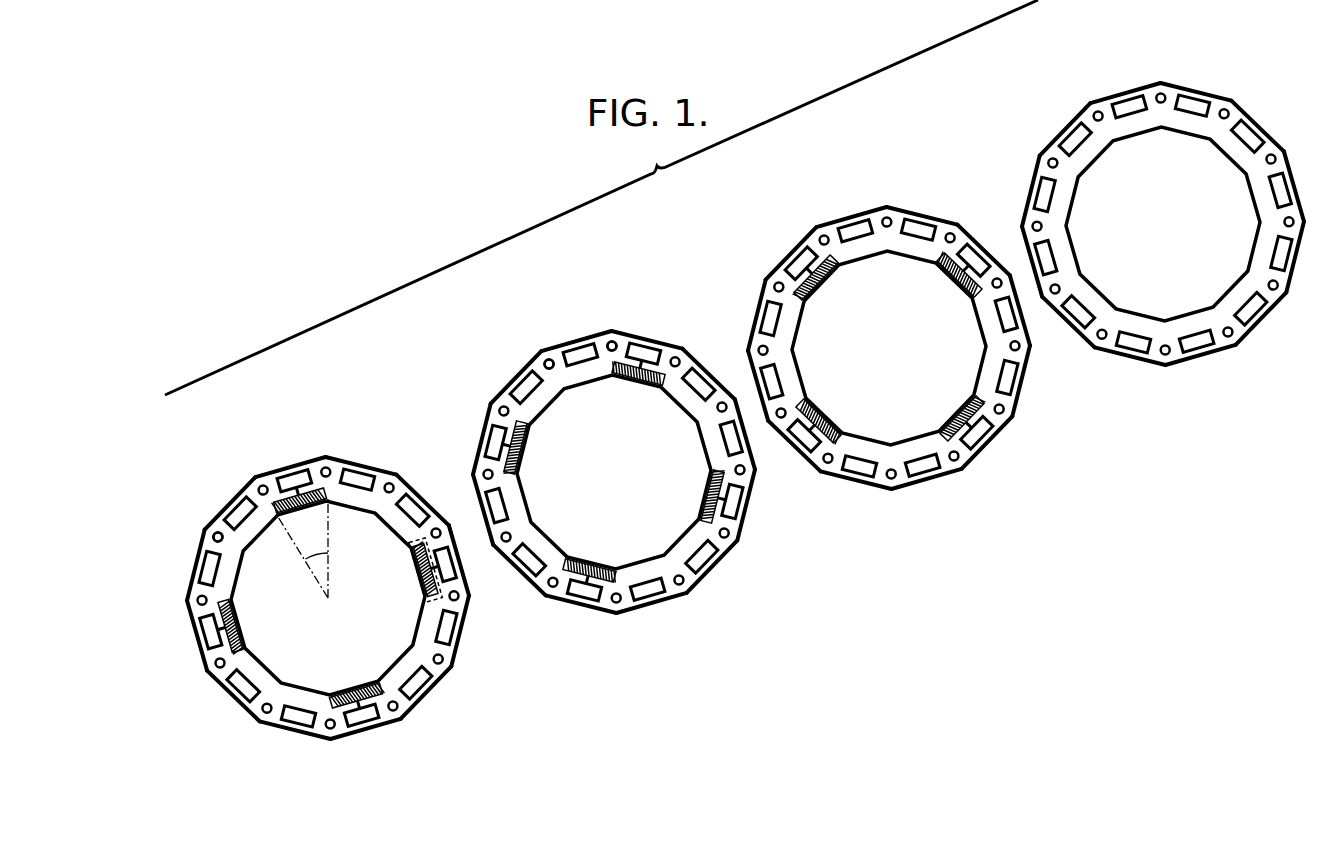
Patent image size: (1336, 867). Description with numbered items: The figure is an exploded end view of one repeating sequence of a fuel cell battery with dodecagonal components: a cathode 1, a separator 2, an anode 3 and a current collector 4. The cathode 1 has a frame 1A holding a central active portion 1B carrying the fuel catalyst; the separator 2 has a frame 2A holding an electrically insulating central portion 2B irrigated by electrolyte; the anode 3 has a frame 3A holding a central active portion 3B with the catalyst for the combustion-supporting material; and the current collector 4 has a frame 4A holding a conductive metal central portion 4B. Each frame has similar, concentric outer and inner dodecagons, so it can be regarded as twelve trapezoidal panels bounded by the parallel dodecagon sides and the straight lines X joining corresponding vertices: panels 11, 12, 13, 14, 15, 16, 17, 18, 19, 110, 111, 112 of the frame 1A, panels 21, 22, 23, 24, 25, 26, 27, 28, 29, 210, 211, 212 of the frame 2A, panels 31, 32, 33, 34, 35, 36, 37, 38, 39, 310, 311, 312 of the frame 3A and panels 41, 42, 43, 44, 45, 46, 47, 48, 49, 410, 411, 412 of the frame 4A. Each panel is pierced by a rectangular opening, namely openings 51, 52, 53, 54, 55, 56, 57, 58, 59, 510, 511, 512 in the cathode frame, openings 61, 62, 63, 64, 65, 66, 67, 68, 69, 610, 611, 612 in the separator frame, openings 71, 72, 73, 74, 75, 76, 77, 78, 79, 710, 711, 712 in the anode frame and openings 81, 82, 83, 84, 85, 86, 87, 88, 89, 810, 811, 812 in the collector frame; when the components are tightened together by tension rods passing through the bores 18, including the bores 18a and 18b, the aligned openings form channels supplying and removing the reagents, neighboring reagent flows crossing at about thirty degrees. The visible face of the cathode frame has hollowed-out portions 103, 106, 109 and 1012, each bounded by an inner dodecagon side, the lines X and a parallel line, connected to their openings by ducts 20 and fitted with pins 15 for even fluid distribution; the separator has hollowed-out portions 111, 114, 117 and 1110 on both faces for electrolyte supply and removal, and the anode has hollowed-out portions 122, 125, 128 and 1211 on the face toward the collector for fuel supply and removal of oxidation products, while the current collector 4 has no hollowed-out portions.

The cathode 1 is at (322, 454).
The separator 2 is at (608, 327).
The anode 3 is at (883, 203).
The current collector 4 is at (1157, 79).
The frame 1A is at (255, 477).
The central active portion 1B is at (290, 668).
The frame 2A is at (481, 466).
The central portion 2B is at (627, 560).
The frame 3A is at (767, 277).
The central active portion 3B is at (893, 440).
The frame 4A is at (1140, 85).
The central portion 4B is at (1168, 305).
The trapezoidal panel 11 is at (361, 465).
The trapezoidal panel 12 is at (423, 499).
The trapezoidal panel 13 is at (460, 560).
The trapezoidal panel 14 is at (461, 631).
The pins 15 is at (427, 693).
The trapezoidal panel 16 is at (366, 730).
The trapezoidal panel 17 is at (295, 731).
The bore 18 is at (218, 537).
The trapezoidal panel 19 is at (196, 636).
The trapezoidal panel 110 is at (195, 565).
The trapezoidal panel 111 is at (229, 503).
The trapezoidal panel 112 is at (290, 466).
The rectangular opening 51 is at (358, 480).
The rectangular opening 52 is at (413, 510).
The rectangular opening 53 is at (445, 564).
The rectangular opening 54 is at (446, 628).
The rectangular opening 55 is at (416, 683).
The rectangular opening 56 is at (362, 715).
The rectangular opening 57 is at (298, 716).
The rectangular opening 58 is at (243, 686).
The rectangular opening 59 is at (211, 632).
The rectangular opening 510 is at (210, 568).
The rectangular opening 511 is at (240, 513).
The rectangular opening 512 is at (294, 481).
The trapezoidal panel 21 is at (647, 339).
The trapezoidal panel 22 is at (709, 373).
The trapezoidal panel 23 is at (746, 434).
The trapezoidal panel 24 is at (747, 505).
The trapezoidal panel 25 is at (713, 567).
The trapezoidal panel 26 is at (652, 604).
The trapezoidal panel 27 is at (581, 605).
The trapezoidal panel 28 is at (519, 571).
The trapezoidal panel 29 is at (482, 510).
The trapezoidal panel 210 is at (481, 439).
The trapezoidal panel 211 is at (515, 377).
The trapezoidal panel 212 is at (576, 340).
The rectangular opening 61 is at (644, 354).
The rectangular opening 62 is at (699, 384).
The rectangular opening 63 is at (731, 438).
The rectangular opening 64 is at (732, 502).
The rectangular opening 65 is at (702, 557).
The rectangular opening 66 is at (648, 589).
The rectangular opening 67 is at (584, 590).
The rectangular opening 68 is at (529, 560).
The rectangular opening 69 is at (497, 506).
The rectangular opening 610 is at (496, 442).
The rectangular opening 611 is at (526, 387).
The rectangular opening 612 is at (580, 355).
The trapezoidal panel 31 is at (922, 215).
The trapezoidal panel 32 is at (984, 249).
The trapezoidal panel 33 is at (1021, 310).
The trapezoidal panel 34 is at (1022, 381).
The trapezoidal panel 35 is at (988, 443).
The trapezoidal panel 36 is at (927, 480).
The trapezoidal panel 37 is at (856, 481).
The trapezoidal panel 38 is at (794, 447).
The trapezoidal panel 39 is at (757, 386).
The trapezoidal panel 310 is at (756, 315).
The trapezoidal panel 311 is at (790, 253).
The trapezoidal panel 312 is at (851, 216).
The rectangular opening 71 is at (919, 230).
The rectangular opening 72 is at (974, 260).
The rectangular opening 73 is at (1006, 314).
The rectangular opening 74 is at (1007, 378).
The rectangular opening 75 is at (977, 433).
The rectangular opening 76 is at (923, 465).
The rectangular opening 77 is at (859, 466).
The rectangular opening 78 is at (804, 436).
The rectangular opening 79 is at (772, 382).
The rectangular opening 710 is at (771, 318).
The rectangular opening 711 is at (801, 263).
The rectangular opening 712 is at (855, 231).
The trapezoidal panel 41 is at (1196, 91).
The trapezoidal panel 42 is at (1258, 125).
The trapezoidal panel 43 is at (1295, 186).
The trapezoidal panel 44 is at (1296, 257).
The trapezoidal panel 45 is at (1262, 319).
The trapezoidal panel 46 is at (1201, 356).
The trapezoidal panel 47 is at (1130, 357).
The trapezoidal panel 48 is at (1072, 300).
The trapezoidal panel 49 is at (1040, 250).
The trapezoidal panel 410 is at (1030, 191).
The trapezoidal panel 411 is at (1064, 129).
The trapezoidal panel 412 is at (1125, 92).
The rectangular opening 81 is at (1193, 106).
The rectangular opening 82 is at (1248, 136).
The rectangular opening 83 is at (1280, 190).
The rectangular opening 84 is at (1281, 254).
The rectangular opening 85 is at (1251, 309).
The rectangular opening 86 is at (1197, 341).
The rectangular opening 87 is at (1133, 342).
The rectangular opening 88 is at (1078, 312).
The rectangular opening 89 is at (1046, 258).
The rectangular opening 810 is at (1045, 194).
The rectangular opening 811 is at (1075, 139).
The rectangular opening 812 is at (1129, 107).
The hollowed-out portion 1012 is at (300, 502).
The hollowed-out portion 103 is at (415, 572).
The hollowed-out portion 106 is at (356, 694).
The hollowed-out portion 109 is at (232, 626).
The hollowed-out portion 114 is at (711, 496).
The hollowed-out portion 117 is at (590, 569).
The hollowed-out portion 1110 is at (517, 448).
The hollowed-out portion 1211 is at (817, 278).
The hollowed-out portion 122 is at (958, 276).
The hollowed-out portion 125 is at (961, 417).
The hollowed-out portion 128 is at (819, 420).
The duct 20 is at (423, 585).
The straight lines X is at (302, 560).
The bore 18a is at (549, 360).
The bore 18b is at (630, 335).